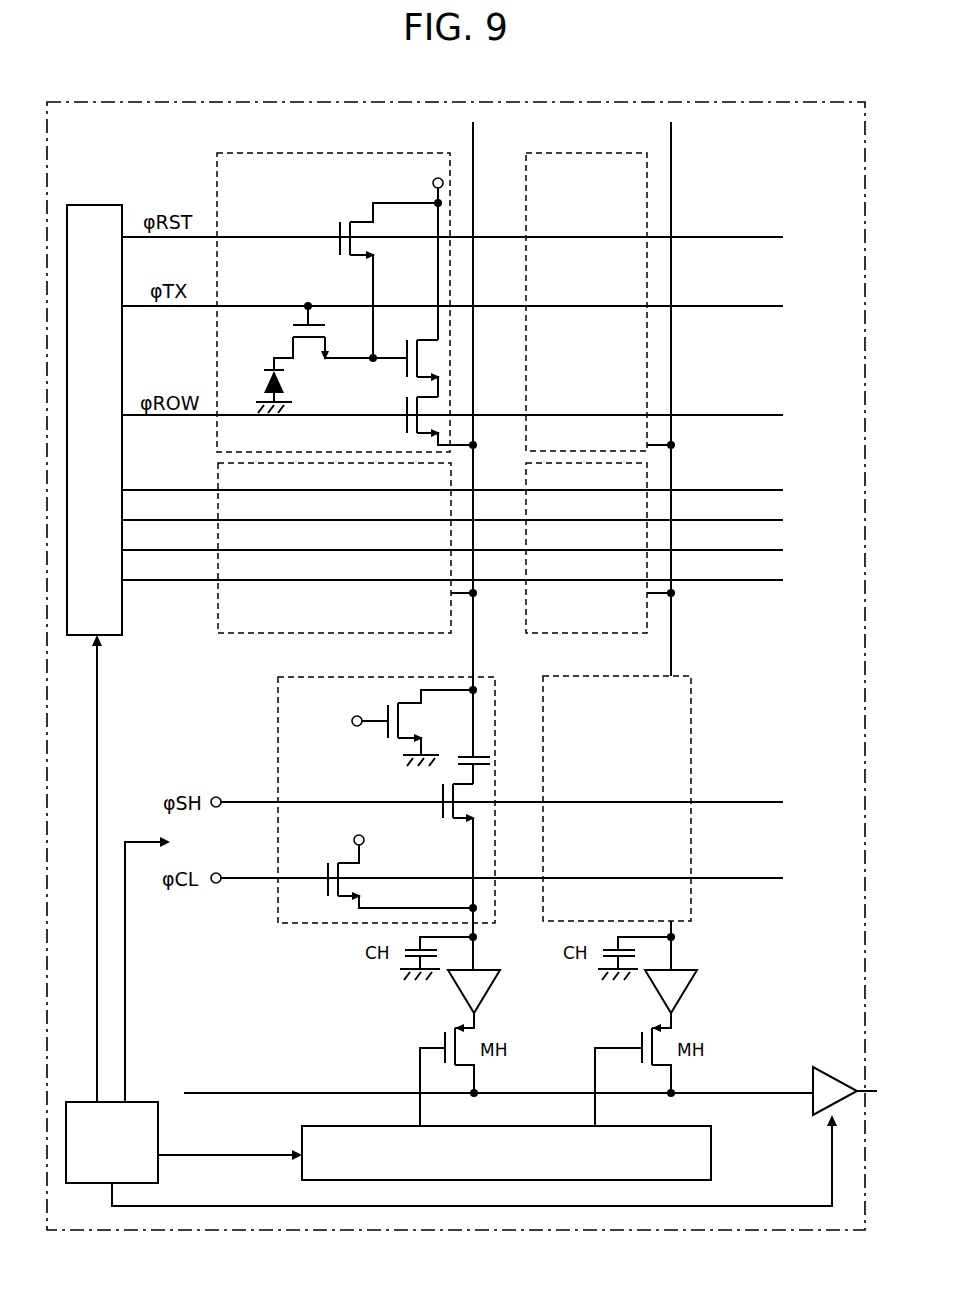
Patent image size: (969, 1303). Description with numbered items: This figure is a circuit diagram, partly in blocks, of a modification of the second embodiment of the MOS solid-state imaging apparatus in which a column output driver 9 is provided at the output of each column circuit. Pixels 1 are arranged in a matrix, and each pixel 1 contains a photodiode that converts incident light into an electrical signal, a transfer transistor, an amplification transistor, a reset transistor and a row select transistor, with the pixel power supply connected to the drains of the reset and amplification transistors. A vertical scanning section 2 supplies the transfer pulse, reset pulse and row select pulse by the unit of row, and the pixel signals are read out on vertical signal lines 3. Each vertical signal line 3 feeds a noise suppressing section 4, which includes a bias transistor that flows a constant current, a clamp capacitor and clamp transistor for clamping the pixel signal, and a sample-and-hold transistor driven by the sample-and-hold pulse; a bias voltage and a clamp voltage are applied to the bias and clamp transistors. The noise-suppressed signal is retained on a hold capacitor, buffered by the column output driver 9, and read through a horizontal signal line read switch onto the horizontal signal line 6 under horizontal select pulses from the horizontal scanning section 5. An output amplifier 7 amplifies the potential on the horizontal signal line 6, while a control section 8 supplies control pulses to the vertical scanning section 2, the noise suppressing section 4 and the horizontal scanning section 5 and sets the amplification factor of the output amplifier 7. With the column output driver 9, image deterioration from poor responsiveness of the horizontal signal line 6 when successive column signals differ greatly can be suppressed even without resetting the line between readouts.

The pixel 1 is at (350, 153).
The vertical scanning section 2 is at (93, 205).
The vertical signal line 3 is at (473, 652).
The noise suppressing section 4 is at (355, 677).
The horizontal scanning section 5 is at (711, 1153).
The horizontal signal line 6 is at (318, 1094).
The output amplifier 7 is at (826, 1067).
The control section 8 is at (158, 1128).
The column output driver 9 is at (492, 992).